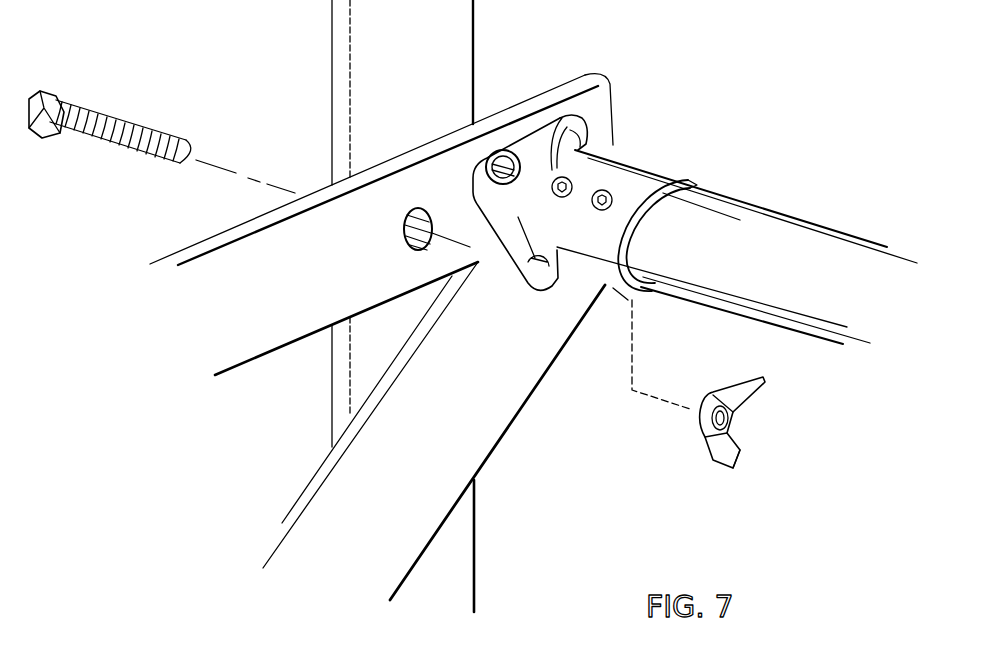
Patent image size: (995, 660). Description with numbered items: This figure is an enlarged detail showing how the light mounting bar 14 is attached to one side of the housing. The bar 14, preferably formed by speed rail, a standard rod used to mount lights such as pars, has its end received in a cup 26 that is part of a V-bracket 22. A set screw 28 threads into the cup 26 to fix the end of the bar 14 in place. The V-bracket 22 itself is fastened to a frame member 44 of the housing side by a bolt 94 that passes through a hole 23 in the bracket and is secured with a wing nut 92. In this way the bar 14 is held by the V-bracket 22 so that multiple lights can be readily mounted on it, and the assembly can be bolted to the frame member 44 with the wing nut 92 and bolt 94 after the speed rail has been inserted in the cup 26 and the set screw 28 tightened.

The bar 14 is at (753, 214).
The V-bracket 22 is at (232, 223).
The hole 23 is at (405, 238).
The cup 26 is at (655, 173).
The set screw 28 is at (570, 180).
The frame member 44 is at (332, 72).
The wing nut 92 is at (757, 402).
The bolt 94 is at (134, 128).